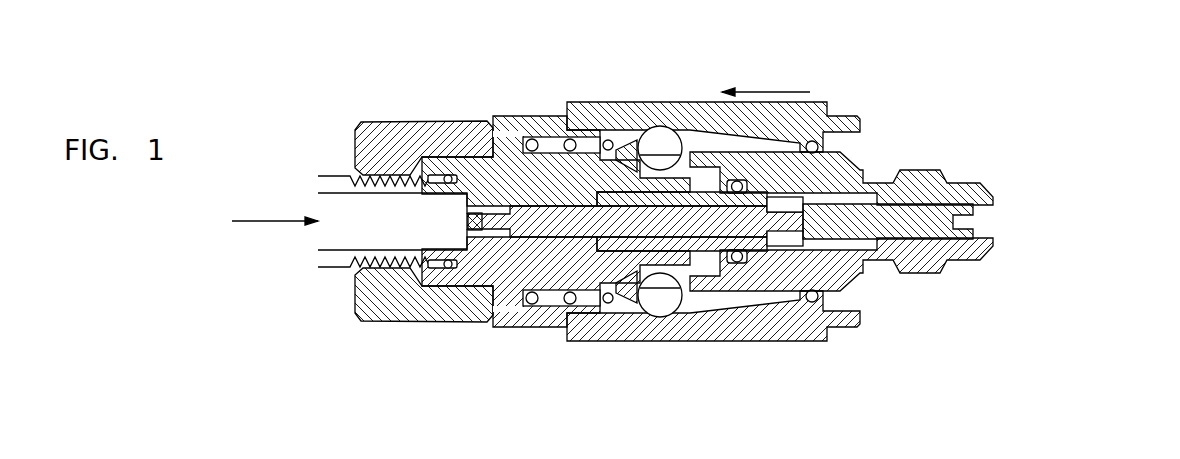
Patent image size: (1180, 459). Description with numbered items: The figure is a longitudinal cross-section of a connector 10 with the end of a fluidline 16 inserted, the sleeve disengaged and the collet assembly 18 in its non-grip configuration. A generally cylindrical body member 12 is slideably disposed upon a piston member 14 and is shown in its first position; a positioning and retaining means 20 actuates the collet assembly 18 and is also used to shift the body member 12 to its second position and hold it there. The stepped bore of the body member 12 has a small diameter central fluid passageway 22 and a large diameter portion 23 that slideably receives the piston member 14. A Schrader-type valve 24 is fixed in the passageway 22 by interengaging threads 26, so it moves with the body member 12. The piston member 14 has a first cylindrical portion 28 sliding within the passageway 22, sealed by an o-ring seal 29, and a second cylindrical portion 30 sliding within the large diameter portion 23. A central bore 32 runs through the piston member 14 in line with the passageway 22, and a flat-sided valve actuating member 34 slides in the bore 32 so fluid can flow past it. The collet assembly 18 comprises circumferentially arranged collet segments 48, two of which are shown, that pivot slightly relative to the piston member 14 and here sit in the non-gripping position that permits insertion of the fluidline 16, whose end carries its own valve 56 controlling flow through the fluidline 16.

The connector 10 is at (865, 96).
The body member 12 is at (920, 167).
The piston member 14 is at (590, 157).
The fluidline 16 is at (318, 176).
The collet assembly 18 is at (455, 121).
The positioning and retaining means 20 is at (637, 101).
The central fluid passageway 22 is at (985, 222).
The large diameter portion 23 is at (699, 167).
The valve 24 is at (913, 232).
The interengaging threads 26 is at (823, 247).
The first cylindrical portion 28 is at (700, 249).
The o-ring seal 29 is at (738, 180).
The second cylindrical portion 30 is at (583, 258).
The central bore 32 is at (513, 258).
The valve actuating member 34 is at (757, 227).
The collet segments 48 is at (382, 298).
The valve 56 is at (466, 200).